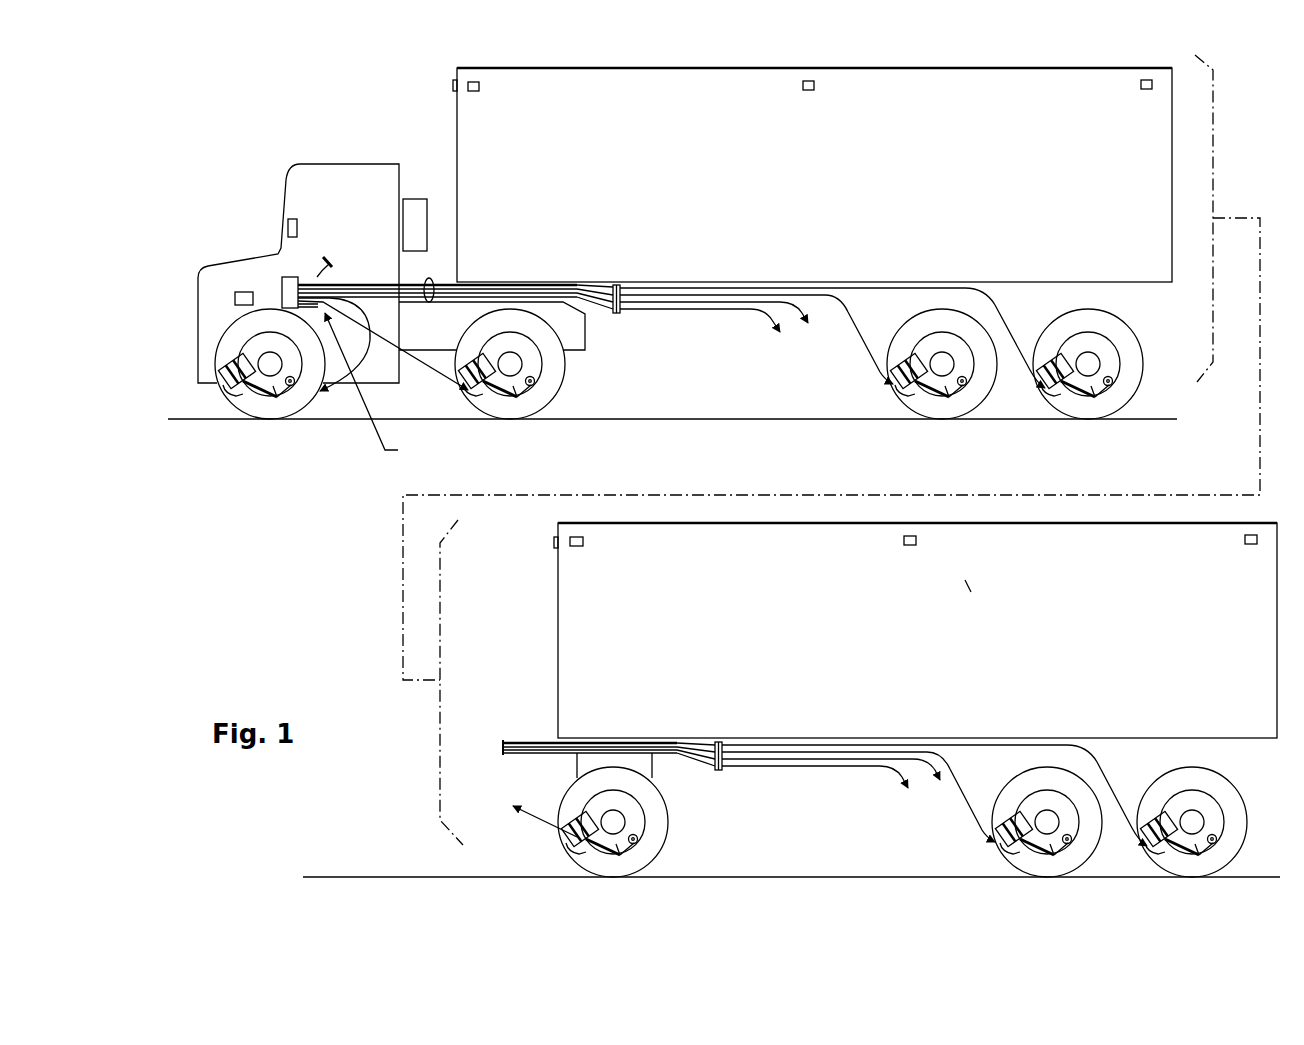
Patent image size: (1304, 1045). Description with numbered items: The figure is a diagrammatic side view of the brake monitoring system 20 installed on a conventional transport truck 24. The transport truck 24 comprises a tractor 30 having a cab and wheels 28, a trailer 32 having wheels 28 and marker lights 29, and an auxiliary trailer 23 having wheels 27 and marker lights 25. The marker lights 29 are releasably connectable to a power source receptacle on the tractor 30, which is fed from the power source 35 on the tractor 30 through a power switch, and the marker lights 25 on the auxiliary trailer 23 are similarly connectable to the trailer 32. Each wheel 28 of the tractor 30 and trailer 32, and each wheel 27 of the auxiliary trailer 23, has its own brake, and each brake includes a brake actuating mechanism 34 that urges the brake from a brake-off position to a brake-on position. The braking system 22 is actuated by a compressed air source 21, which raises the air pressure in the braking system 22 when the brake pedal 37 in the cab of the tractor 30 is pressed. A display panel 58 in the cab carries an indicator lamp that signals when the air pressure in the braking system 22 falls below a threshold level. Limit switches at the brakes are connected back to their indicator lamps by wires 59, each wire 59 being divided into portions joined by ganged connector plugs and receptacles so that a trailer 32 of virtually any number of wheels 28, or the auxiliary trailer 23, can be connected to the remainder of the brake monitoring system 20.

The brake monitoring system 20 is at (305, 268).
The compressed air source 21 is at (414, 198).
The braking system 22 is at (468, 392).
The auxiliary trailer 23 is at (348, 628).
The transport truck 24 is at (317, 98).
The marker lights 25 is at (555, 548).
The wheels 27 is at (664, 835).
The wheels 28 is at (232, 396).
The marker lights 29 is at (454, 91).
The tractor 30 is at (305, 173).
The trailer 32 is at (592, 78).
The brake actuating mechanism 34 is at (298, 423).
The power source 35 is at (235, 302).
The brake pedal 37 is at (333, 262).
The display panel 58 is at (297, 218).
The wire 59 is at (431, 279).